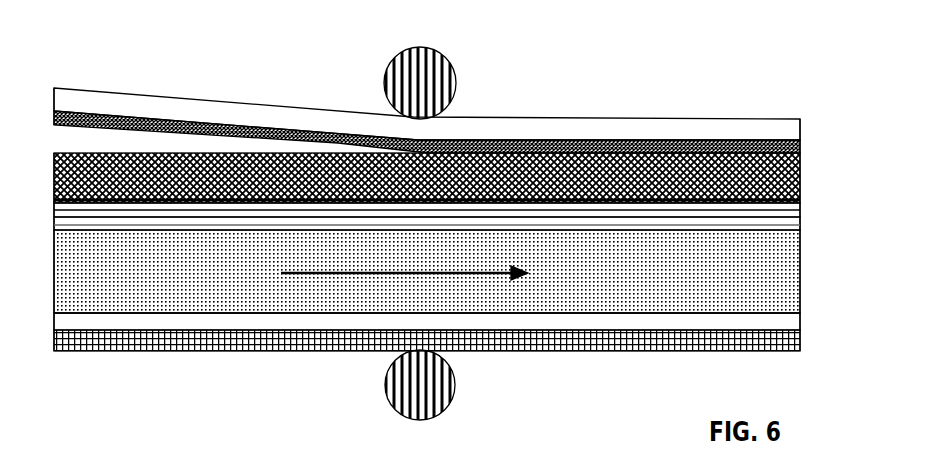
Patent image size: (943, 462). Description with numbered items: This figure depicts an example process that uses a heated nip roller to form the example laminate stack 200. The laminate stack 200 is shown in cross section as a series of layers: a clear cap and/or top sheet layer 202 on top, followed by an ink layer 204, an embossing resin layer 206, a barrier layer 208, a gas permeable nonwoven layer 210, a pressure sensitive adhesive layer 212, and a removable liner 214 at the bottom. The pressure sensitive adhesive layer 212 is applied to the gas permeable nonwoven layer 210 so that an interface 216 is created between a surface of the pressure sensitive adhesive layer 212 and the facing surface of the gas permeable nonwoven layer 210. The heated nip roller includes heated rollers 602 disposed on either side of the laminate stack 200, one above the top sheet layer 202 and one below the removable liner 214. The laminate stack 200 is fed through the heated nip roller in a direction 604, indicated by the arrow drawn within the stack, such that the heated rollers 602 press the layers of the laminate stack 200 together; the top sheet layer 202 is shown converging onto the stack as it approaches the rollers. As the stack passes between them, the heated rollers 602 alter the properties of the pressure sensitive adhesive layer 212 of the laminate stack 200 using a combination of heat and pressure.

The laminate stack 200 is at (140, 52).
The top sheet layer 202 is at (792, 127).
The ink layer 204 is at (792, 140).
The embossing resin layer 206 is at (792, 177).
The barrier layer 208 is at (792, 212).
The gas permeable nonwoven layer 210 is at (792, 282).
The pressure sensitive adhesive layer 212 is at (792, 317).
The removable liner 214 is at (792, 328).
The interface 216 is at (66, 299).
The heated rollers 602 is at (442, 53).
The direction 604 is at (322, 272).